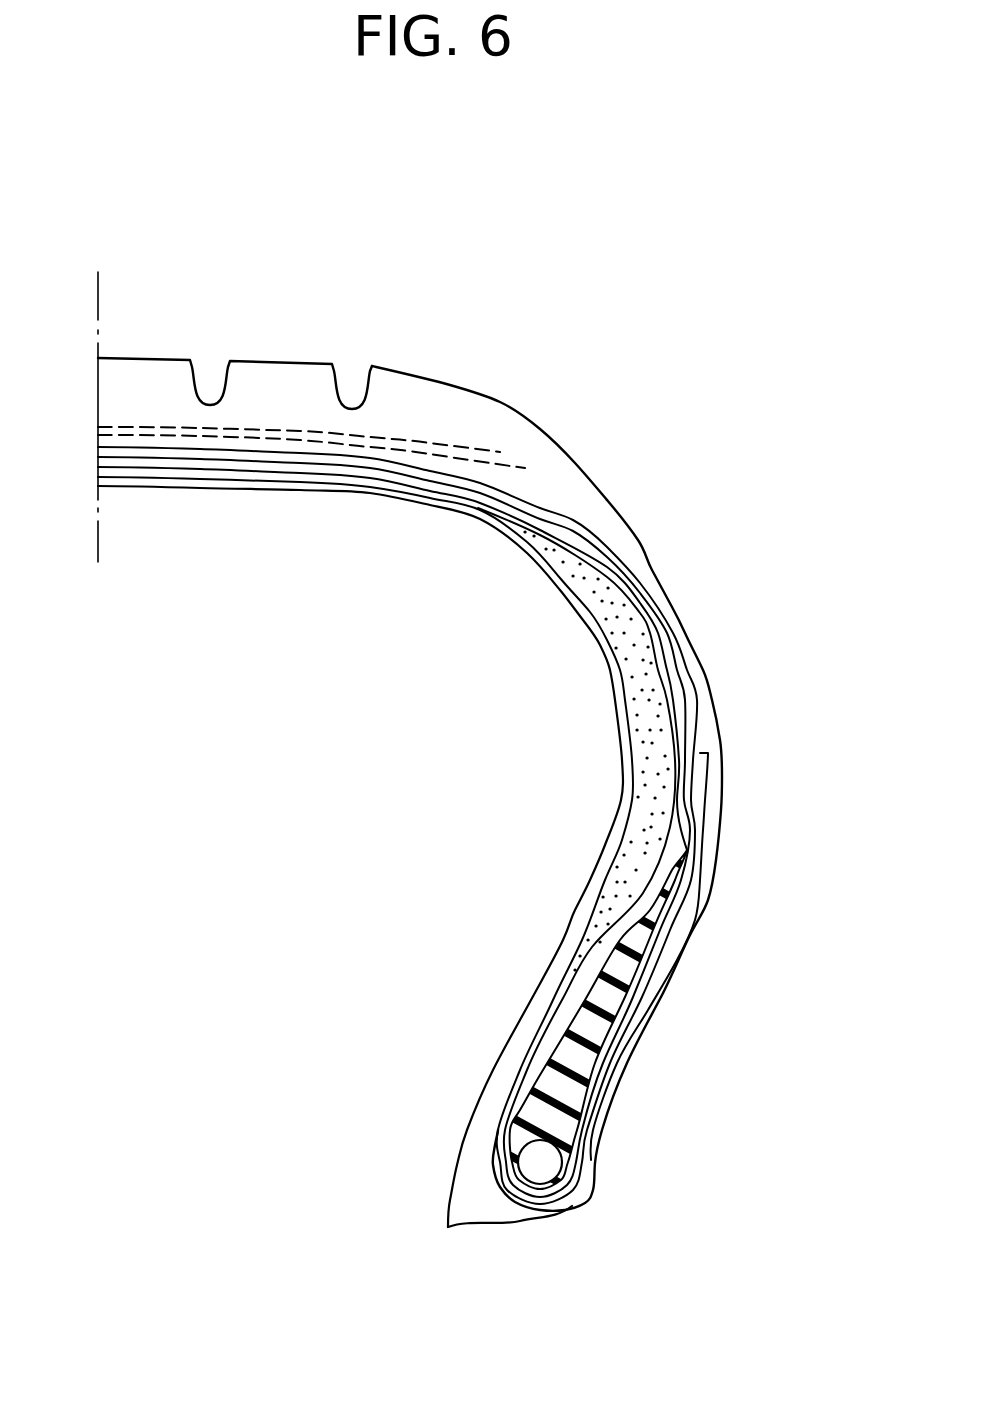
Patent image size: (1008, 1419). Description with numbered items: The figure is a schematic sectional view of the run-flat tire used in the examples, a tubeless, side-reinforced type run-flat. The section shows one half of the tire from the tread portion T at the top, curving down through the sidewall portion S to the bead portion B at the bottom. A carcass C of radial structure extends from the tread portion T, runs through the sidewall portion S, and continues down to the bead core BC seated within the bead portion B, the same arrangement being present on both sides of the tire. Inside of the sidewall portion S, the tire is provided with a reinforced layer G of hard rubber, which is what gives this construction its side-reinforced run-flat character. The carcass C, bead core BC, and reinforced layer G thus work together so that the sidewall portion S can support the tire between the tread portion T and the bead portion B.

The tread portion T is at (432, 314).
The sidewall portion S is at (754, 648).
The bead portion B is at (652, 1160).
The bead core BC is at (540, 1170).
The carcass C is at (518, 1108).
The reinforced layer G is at (643, 712).